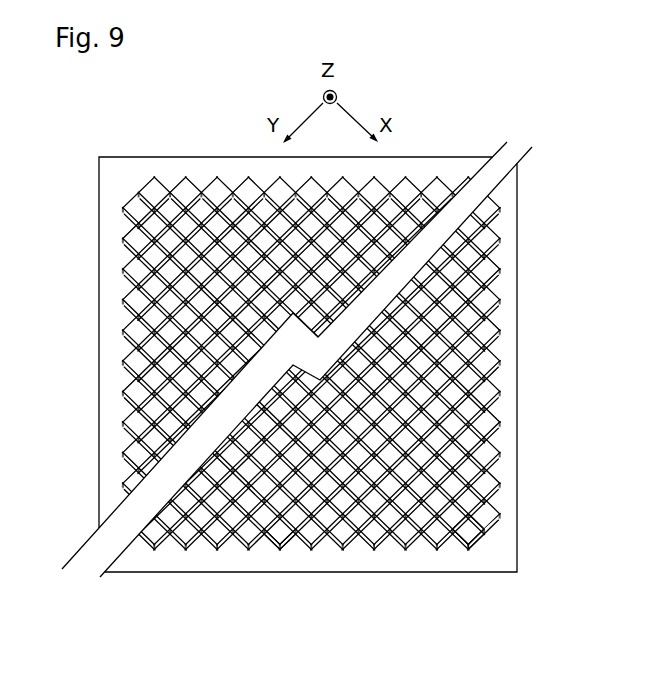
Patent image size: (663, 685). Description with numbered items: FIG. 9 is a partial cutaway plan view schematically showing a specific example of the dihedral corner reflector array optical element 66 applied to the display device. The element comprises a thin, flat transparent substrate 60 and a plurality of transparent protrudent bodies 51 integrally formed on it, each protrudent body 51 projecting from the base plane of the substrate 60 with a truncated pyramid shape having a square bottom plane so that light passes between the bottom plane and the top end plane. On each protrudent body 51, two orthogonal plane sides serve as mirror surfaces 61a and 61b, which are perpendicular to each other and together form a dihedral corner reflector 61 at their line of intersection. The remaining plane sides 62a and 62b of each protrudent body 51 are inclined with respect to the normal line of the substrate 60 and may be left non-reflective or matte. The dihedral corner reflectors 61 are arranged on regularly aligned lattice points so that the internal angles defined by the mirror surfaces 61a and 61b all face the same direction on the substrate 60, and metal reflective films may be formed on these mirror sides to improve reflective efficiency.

The protrudent body 51 is at (215, 170).
The substrate 60 is at (512, 268).
The dihedral corner reflector 61 is at (523, 623).
The mirror surface 61a is at (474, 550).
The mirror surface 61b is at (464, 548).
The plane side 62a is at (274, 548).
The plane side 62b is at (286, 548).
The dihedral corner reflector array optical element 66 is at (521, 120).